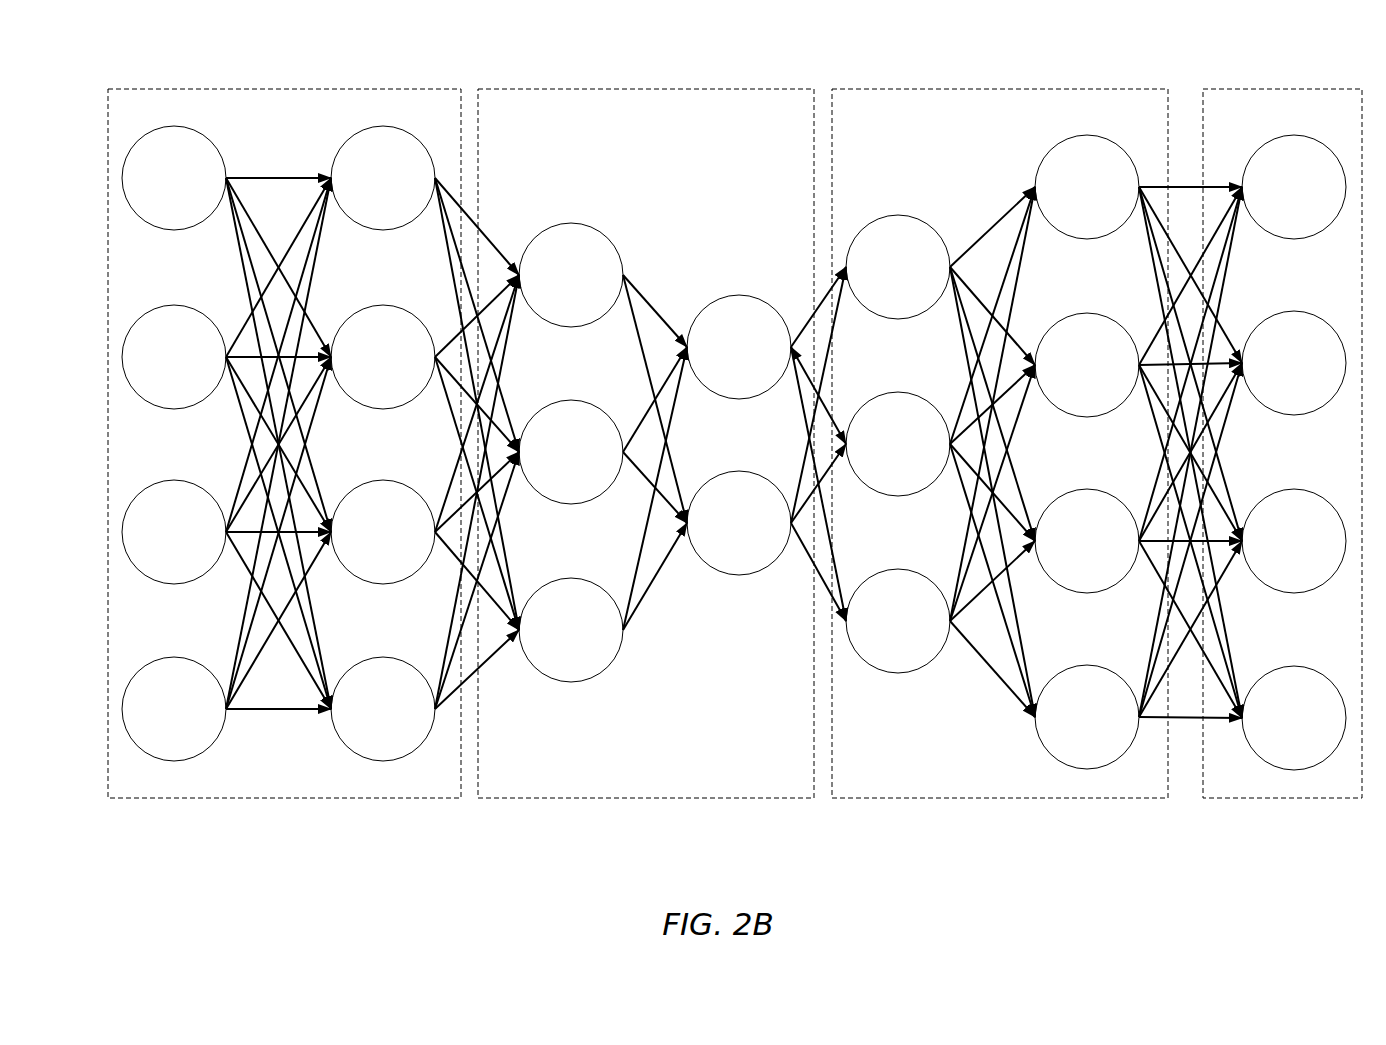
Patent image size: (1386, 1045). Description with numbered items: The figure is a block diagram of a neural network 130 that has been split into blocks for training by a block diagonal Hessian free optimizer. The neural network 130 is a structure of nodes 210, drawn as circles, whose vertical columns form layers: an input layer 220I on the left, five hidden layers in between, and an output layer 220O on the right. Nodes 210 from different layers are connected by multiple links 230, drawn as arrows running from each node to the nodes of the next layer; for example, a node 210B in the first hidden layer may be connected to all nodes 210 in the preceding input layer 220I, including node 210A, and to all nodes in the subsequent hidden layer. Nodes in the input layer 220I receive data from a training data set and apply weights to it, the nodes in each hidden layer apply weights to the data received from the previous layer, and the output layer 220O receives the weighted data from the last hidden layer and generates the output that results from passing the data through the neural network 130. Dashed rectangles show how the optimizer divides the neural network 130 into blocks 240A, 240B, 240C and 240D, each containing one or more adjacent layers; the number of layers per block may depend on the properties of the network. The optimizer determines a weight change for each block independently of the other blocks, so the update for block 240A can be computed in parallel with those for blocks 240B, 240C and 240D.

The neural network 130 is at (877, 64).
The node 210 is at (739, 347).
The node 210A is at (174, 178).
The node 210B is at (383, 178).
The link 230 is at (280, 176).
The block 240A is at (284, 443).
The block 240B is at (646, 443).
The block 240C is at (1000, 443).
The block 240D is at (1282, 443).
The input layer 220I is at (174, 498).
The output layer 220O is at (1291, 778).